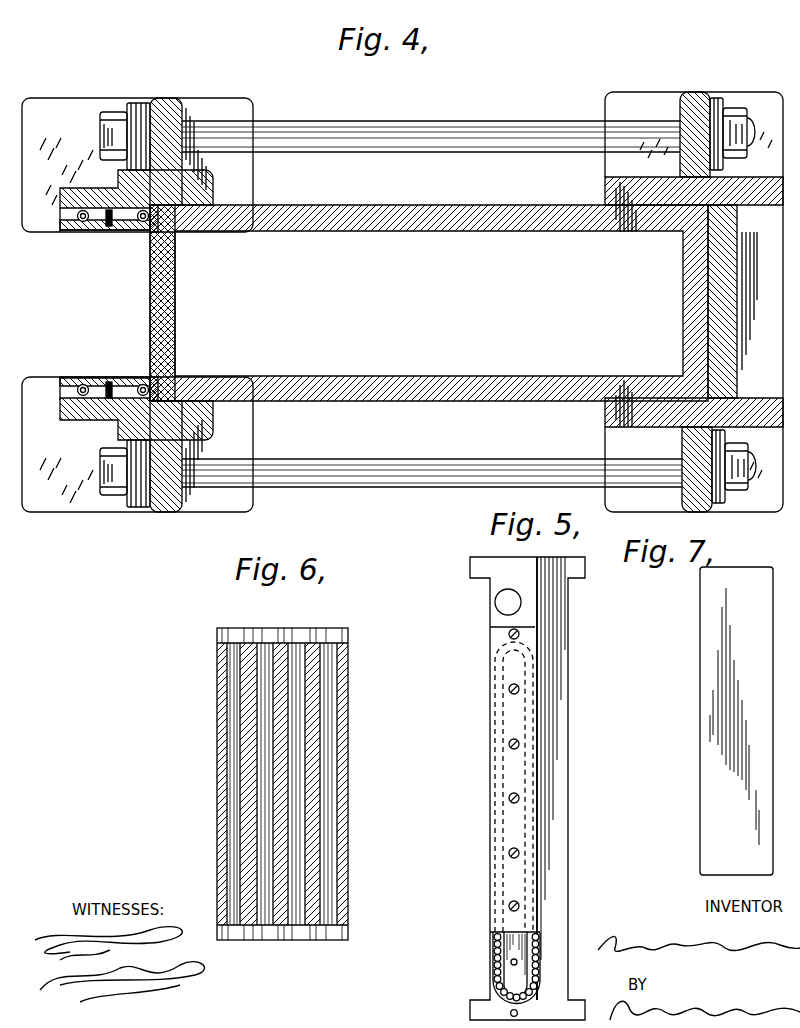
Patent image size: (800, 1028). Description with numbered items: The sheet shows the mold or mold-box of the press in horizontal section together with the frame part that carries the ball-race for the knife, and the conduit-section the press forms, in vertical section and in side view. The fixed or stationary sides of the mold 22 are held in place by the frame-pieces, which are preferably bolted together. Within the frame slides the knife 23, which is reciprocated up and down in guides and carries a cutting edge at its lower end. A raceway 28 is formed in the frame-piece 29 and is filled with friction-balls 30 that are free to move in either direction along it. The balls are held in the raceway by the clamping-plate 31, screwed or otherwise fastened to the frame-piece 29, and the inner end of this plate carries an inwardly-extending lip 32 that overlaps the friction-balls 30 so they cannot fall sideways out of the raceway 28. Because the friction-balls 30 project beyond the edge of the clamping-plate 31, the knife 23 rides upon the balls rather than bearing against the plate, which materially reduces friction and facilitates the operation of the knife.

In FIG. 4, the stationary sides of the mold 22 is at (461, 219).
In FIG. 4, the sliding knife 23 is at (174, 289).
In FIG. 4, the raceway 28 is at (77, 220).
In FIG. 5, the raceway 28 is at (500, 842).
In FIG. 4, the frame-piece 29 is at (172, 102).
In FIG. 5, the frame-piece 29 is at (492, 648).
In FIG. 4, the friction-balls 30 is at (83, 224).
In FIG. 5, the friction-balls 30 is at (502, 974).
In FIG. 4, the clamping-plate 31 is at (107, 224).
In FIG. 5, the clamping-plate 31 is at (537, 827).
In FIG. 4, the inwardly-extending lip 32 is at (148, 224).